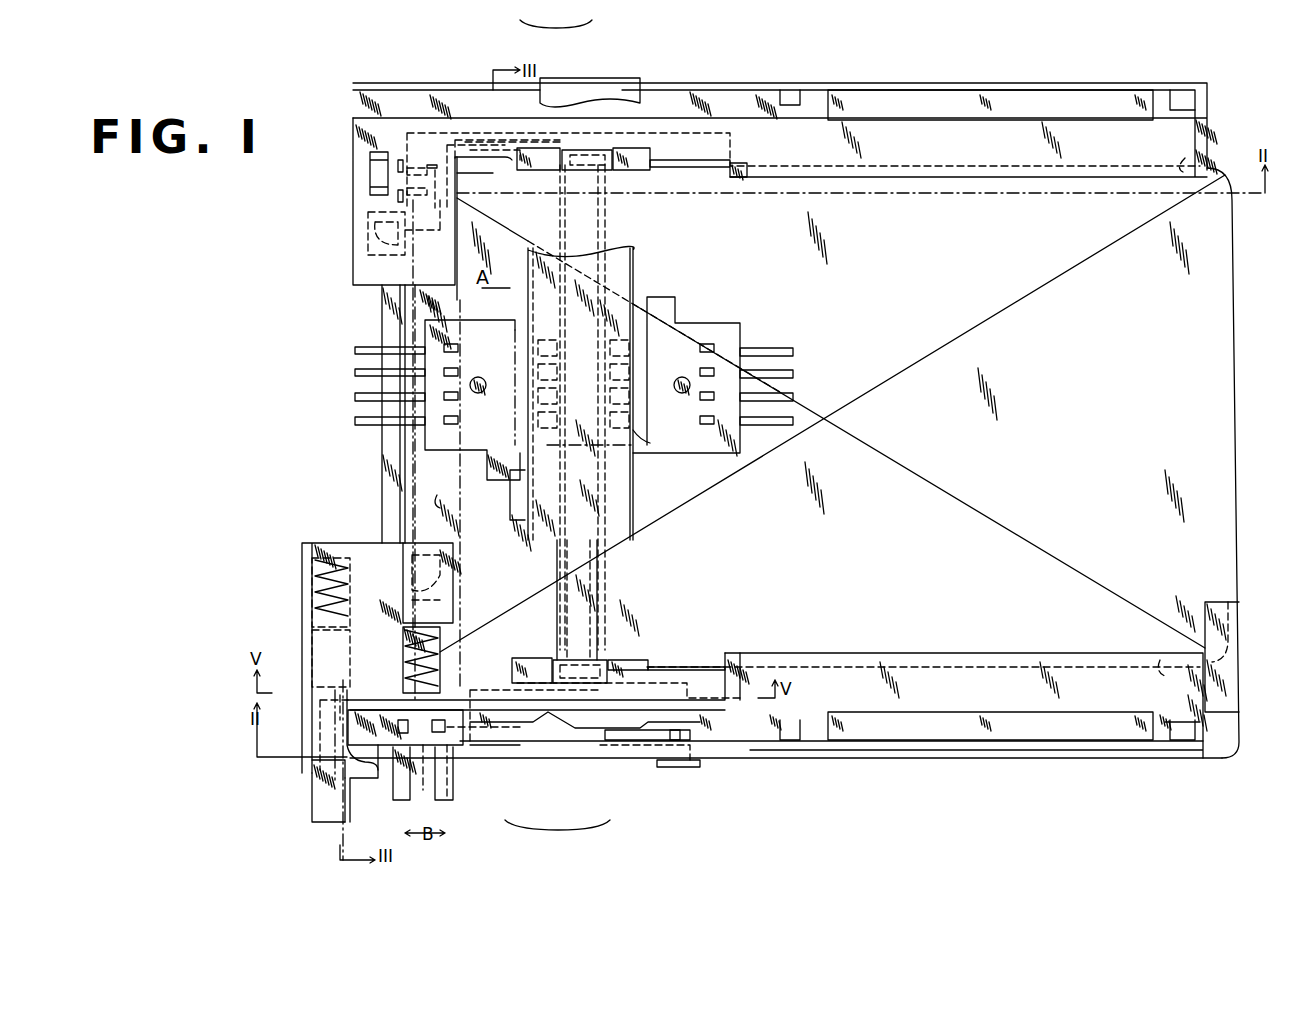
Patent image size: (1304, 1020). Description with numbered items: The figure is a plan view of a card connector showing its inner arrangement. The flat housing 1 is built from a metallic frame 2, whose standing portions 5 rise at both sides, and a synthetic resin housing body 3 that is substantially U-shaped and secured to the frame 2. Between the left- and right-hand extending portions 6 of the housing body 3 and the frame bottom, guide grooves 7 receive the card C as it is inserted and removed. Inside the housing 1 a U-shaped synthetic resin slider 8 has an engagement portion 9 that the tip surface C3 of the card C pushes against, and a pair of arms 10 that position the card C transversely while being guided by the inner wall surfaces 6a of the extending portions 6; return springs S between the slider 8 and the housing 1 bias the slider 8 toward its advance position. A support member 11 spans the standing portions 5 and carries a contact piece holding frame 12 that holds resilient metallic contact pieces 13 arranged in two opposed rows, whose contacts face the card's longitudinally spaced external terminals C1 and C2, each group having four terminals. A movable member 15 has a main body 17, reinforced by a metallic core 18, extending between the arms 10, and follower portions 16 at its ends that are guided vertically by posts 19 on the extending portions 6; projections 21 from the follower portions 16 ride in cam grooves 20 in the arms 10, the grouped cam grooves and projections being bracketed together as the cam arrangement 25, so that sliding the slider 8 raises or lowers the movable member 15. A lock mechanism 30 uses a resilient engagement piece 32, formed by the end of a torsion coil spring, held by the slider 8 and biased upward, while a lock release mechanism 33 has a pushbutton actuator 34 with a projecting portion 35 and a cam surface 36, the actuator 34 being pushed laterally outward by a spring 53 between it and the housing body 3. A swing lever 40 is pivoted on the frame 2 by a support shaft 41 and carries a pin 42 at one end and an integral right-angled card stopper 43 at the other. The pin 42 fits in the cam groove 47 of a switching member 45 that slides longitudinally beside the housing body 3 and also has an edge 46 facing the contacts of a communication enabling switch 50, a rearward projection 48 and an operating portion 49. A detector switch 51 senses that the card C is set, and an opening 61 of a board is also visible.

The housing 1 is at (344, 244).
The frame 2 is at (905, 90).
The housing body 3 is at (748, 90).
The standing portions 5 is at (968, 90).
The extending portions 6 is at (1032, 118).
The inner wall surfaces 6a is at (710, 133).
The guide grooves 7 is at (1180, 158).
The slider 8 is at (380, 482).
The engagement portion 9 is at (455, 538).
The arms 10 is at (705, 170).
The support member 11 is at (612, 78).
The contact piece holding frame 12 is at (680, 453).
The contact pieces 13 is at (355, 421).
The movable member 15 is at (605, 572).
The follower portions 16 is at (612, 170).
The main body 17 is at (557, 622).
The metallic core 18 is at (600, 603).
The posts 19 is at (540, 170).
The cam grooves 20 is at (545, 140).
The projections 21 is at (582, 140).
The lever assembly 25 is at (570, 21).
The lock mechanism 30 is at (340, 740).
The resilient engagement piece 32 is at (440, 650).
The lock release mechanism 33 is at (309, 830).
The actuator 34 is at (320, 822).
The projecting portion 35 is at (378, 760).
The cam surface 36 is at (331, 717).
The swing lever 40 is at (815, 758).
The support shaft 41 is at (680, 767).
The pin 42 is at (485, 745).
The card stopper 43 is at (1235, 602).
The switching member 45 is at (405, 752).
The edge 46 is at (538, 745).
The cam groove 47 is at (455, 745).
The projection 48 is at (352, 775).
The operating portion 49 is at (395, 800).
The communication enabling switch 50 is at (580, 740).
The detector switch 51 is at (400, 155).
The spring 53 is at (312, 585).
The opening 61 is at (650, 433).
The card C is at (1238, 360).
The external terminals C1 is at (630, 396).
The external terminals C2 is at (538, 396).
The tip surface C3 is at (440, 502).
The return springs S is at (375, 282).